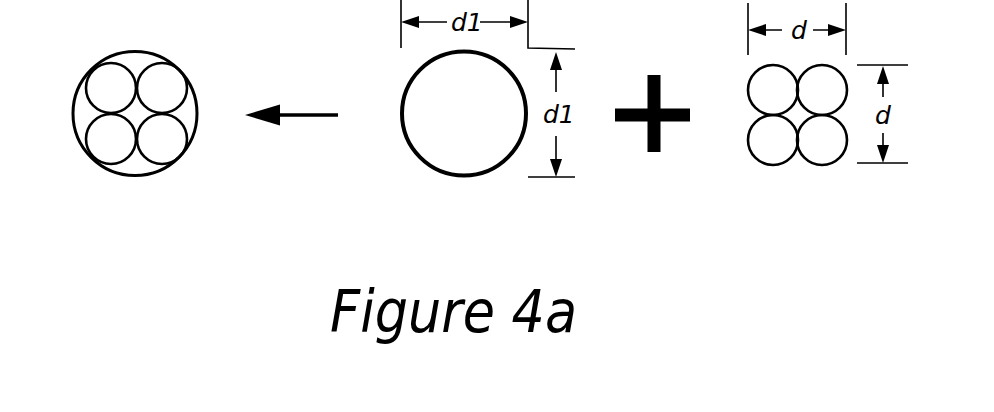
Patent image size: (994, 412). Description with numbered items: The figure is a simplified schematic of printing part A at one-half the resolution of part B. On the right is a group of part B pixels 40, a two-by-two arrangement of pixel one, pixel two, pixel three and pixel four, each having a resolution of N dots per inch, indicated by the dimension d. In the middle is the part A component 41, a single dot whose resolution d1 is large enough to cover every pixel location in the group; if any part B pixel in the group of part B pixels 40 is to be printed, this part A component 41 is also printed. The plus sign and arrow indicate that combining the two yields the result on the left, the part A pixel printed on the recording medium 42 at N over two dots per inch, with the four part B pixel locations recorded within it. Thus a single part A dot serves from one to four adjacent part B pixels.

The group of part B pixels 40 is at (799, 184).
The part A component 41 is at (434, 184).
The part A pixel printed on recording medium 42 is at (125, 186).